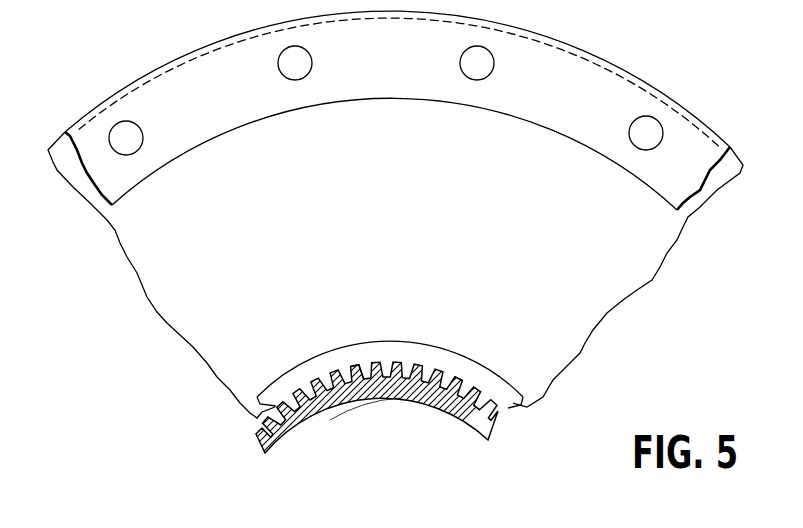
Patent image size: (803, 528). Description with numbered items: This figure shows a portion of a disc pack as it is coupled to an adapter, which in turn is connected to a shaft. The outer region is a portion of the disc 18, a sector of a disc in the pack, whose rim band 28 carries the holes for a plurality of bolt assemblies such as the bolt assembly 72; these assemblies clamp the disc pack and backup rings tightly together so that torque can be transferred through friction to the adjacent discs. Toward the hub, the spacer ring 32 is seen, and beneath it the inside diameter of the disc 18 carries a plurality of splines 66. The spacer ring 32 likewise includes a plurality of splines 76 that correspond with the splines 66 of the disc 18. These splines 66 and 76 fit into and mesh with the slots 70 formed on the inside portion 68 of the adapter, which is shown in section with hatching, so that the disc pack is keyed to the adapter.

The disc 18 is at (583, 357).
The rim flange 28 is at (380, 95).
The spacer 32 is at (451, 348).
The splines 66 is at (255, 410).
The inside portion 68 is at (312, 418).
The slots 70 is at (353, 399).
The bolt assembly 72 is at (278, 64).
The splines 76 is at (352, 372).